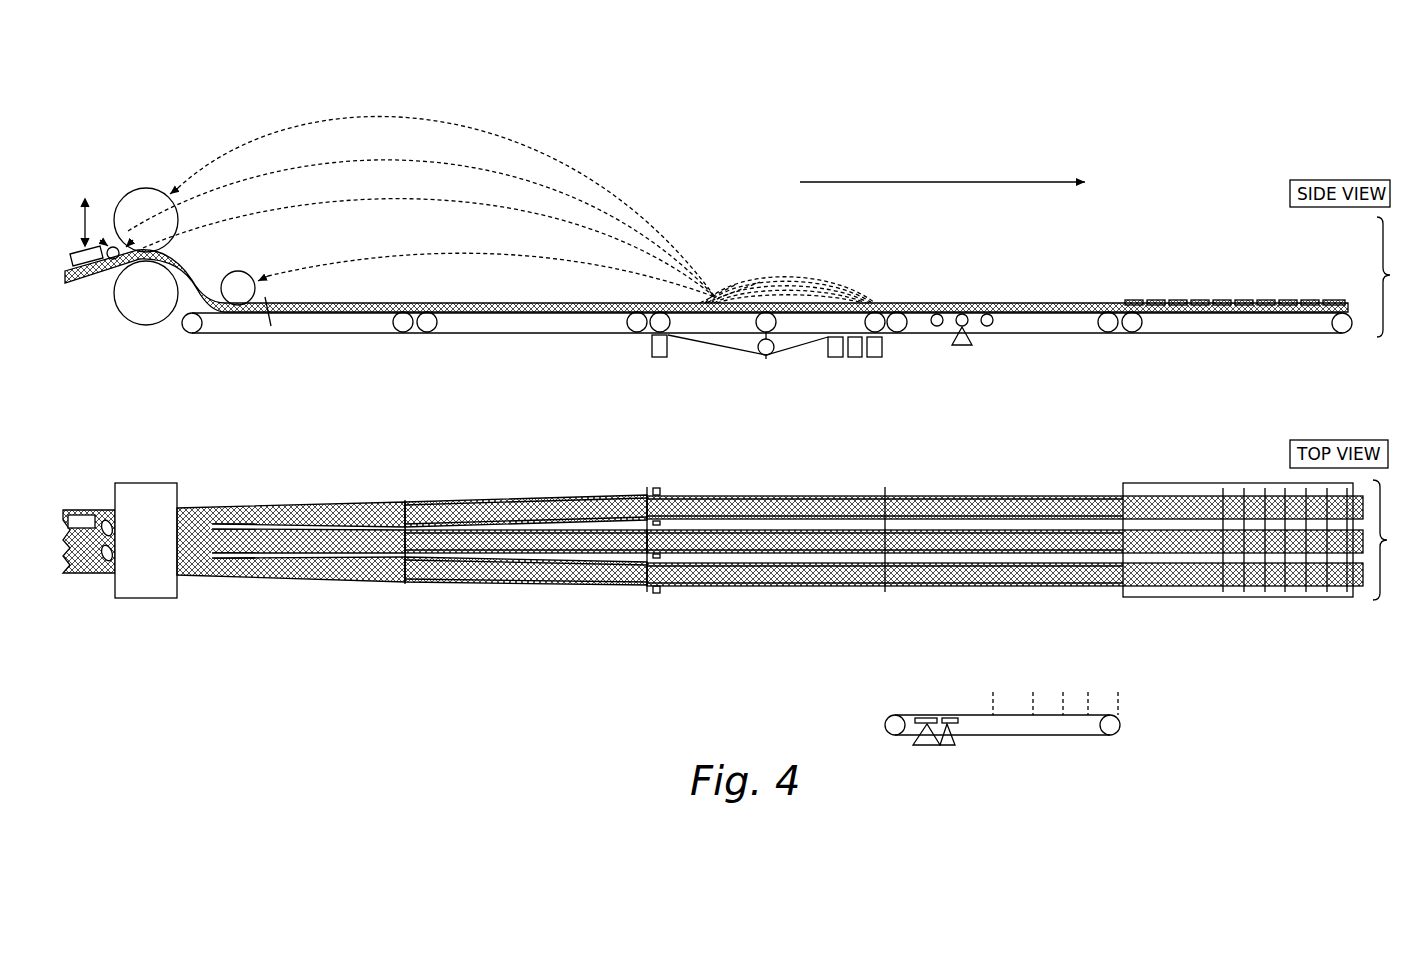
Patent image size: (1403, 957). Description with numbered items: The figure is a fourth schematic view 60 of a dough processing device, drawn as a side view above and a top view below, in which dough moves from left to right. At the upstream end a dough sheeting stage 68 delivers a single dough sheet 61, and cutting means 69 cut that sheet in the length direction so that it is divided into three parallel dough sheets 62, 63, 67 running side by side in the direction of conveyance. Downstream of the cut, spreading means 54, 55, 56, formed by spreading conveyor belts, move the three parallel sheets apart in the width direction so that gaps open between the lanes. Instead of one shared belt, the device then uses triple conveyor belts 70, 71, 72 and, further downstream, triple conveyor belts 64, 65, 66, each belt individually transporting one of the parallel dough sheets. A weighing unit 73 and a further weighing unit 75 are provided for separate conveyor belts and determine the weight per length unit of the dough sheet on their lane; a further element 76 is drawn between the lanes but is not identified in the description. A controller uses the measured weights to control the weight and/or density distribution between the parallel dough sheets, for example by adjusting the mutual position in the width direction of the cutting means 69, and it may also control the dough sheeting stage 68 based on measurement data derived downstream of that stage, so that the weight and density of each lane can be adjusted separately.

The fourth schematic view 60 is at (1153, 212).
The dough sheeting stage 68 is at (177, 163).
The cutting means 69 is at (245, 262).
The weighing unit 73 is at (1005, 292).
The single dough sheet 61 is at (190, 540).
The parallel dough sheet 62 is at (332, 522).
The parallel dough sheet 63 is at (373, 540).
The parallel dough sheet 67 is at (327, 563).
The spreading means 54 is at (500, 503).
The spreading means 55 is at (543, 530).
The spreading means 56 is at (518, 579).
The triple conveyor belt 70 is at (725, 523).
The triple conveyor belt 71 is at (775, 553).
The triple conveyor belt 72 is at (823, 586).
The first gap 76 is at (987, 520).
The weighing unit 75 is at (1037, 558).
The triple conveyor belt 64 is at (930, 523).
The triple conveyor belt 65 is at (983, 553).
The triple conveyor belt 66 is at (1028, 587).